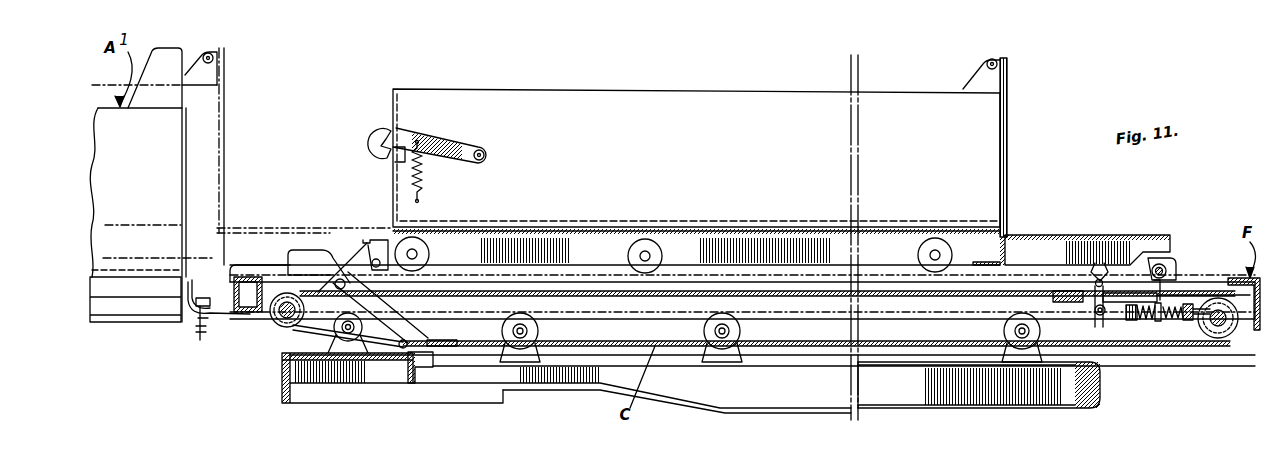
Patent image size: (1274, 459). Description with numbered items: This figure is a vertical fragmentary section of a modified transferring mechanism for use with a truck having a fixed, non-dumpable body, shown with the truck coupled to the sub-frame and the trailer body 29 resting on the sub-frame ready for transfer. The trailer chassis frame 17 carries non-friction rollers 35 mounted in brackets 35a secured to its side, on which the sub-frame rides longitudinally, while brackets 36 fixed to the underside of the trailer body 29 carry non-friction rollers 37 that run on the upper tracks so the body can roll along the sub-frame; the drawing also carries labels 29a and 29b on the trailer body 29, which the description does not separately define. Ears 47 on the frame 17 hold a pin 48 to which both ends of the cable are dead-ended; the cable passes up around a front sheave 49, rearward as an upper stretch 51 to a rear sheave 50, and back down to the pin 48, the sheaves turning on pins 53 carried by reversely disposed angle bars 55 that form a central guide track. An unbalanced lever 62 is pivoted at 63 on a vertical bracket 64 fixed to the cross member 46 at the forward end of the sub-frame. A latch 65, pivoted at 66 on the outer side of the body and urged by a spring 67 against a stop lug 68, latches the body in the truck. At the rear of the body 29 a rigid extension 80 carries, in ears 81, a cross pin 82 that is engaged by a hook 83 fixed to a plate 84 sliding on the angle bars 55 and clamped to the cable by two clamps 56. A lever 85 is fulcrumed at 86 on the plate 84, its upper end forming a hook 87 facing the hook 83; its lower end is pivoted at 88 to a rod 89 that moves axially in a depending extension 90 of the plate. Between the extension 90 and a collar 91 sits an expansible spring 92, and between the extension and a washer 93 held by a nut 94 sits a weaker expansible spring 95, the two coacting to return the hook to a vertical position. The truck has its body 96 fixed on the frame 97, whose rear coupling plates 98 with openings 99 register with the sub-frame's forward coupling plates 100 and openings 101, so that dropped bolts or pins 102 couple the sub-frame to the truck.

The frame 17 is at (953, 396).
The trailer body 29 is at (208, 117).
The upright of carriage panel 29a is at (1007, 124).
The pivot bracket of carriage panel 29b is at (998, 61).
The non-friction rollers 35 is at (708, 343).
The brackets 35a is at (746, 350).
The brackets 36 is at (602, 231).
The non-friction rollers 37 is at (670, 240).
The cross member 46 is at (357, 355).
The ears 47 is at (410, 385).
The pin 48 is at (445, 330).
The front sheave 49 is at (307, 332).
The rear sheave 50 is at (1230, 334).
The upper stretch 51 is at (706, 291).
The pins 53 is at (285, 318).
The angle bars 55 is at (814, 346).
The clamps 56 is at (1062, 292).
The unbalanced lever 62 is at (309, 250).
The pivot 63 is at (340, 279).
The bracket 64 is at (320, 360).
The latch 65 is at (450, 137).
The pivot 66 is at (485, 153).
The spring 67 is at (424, 182).
The stop lug 68 is at (395, 153).
The rigid extension 80 is at (292, 228).
The ears 81 is at (1174, 262).
The cross pin 82 is at (1167, 270).
The hook 83 is at (1178, 283).
The plate 84 is at (1124, 293).
The lever 85 is at (1104, 316).
The fulcrum 86 is at (1100, 286).
The hook 87 is at (1094, 263).
The pivot 88 is at (1097, 316).
The rod 89 is at (1130, 322).
The depending extension 90 is at (1176, 320).
The collar 91 is at (1148, 322).
The expansible spring 92 is at (1160, 322).
The washer 93 is at (1192, 295).
The nut 94 is at (1205, 322).
The expansible spring 95 is at (1189, 322).
The body 96 is at (152, 185).
The frame 97 is at (134, 296).
The horizontal coupling plates 98 is at (190, 318).
The openings 99 is at (198, 326).
The horizontal coupling plates 100 is at (253, 320).
The openings 101 is at (198, 310).
The bolts or pins 102 is at (204, 342).